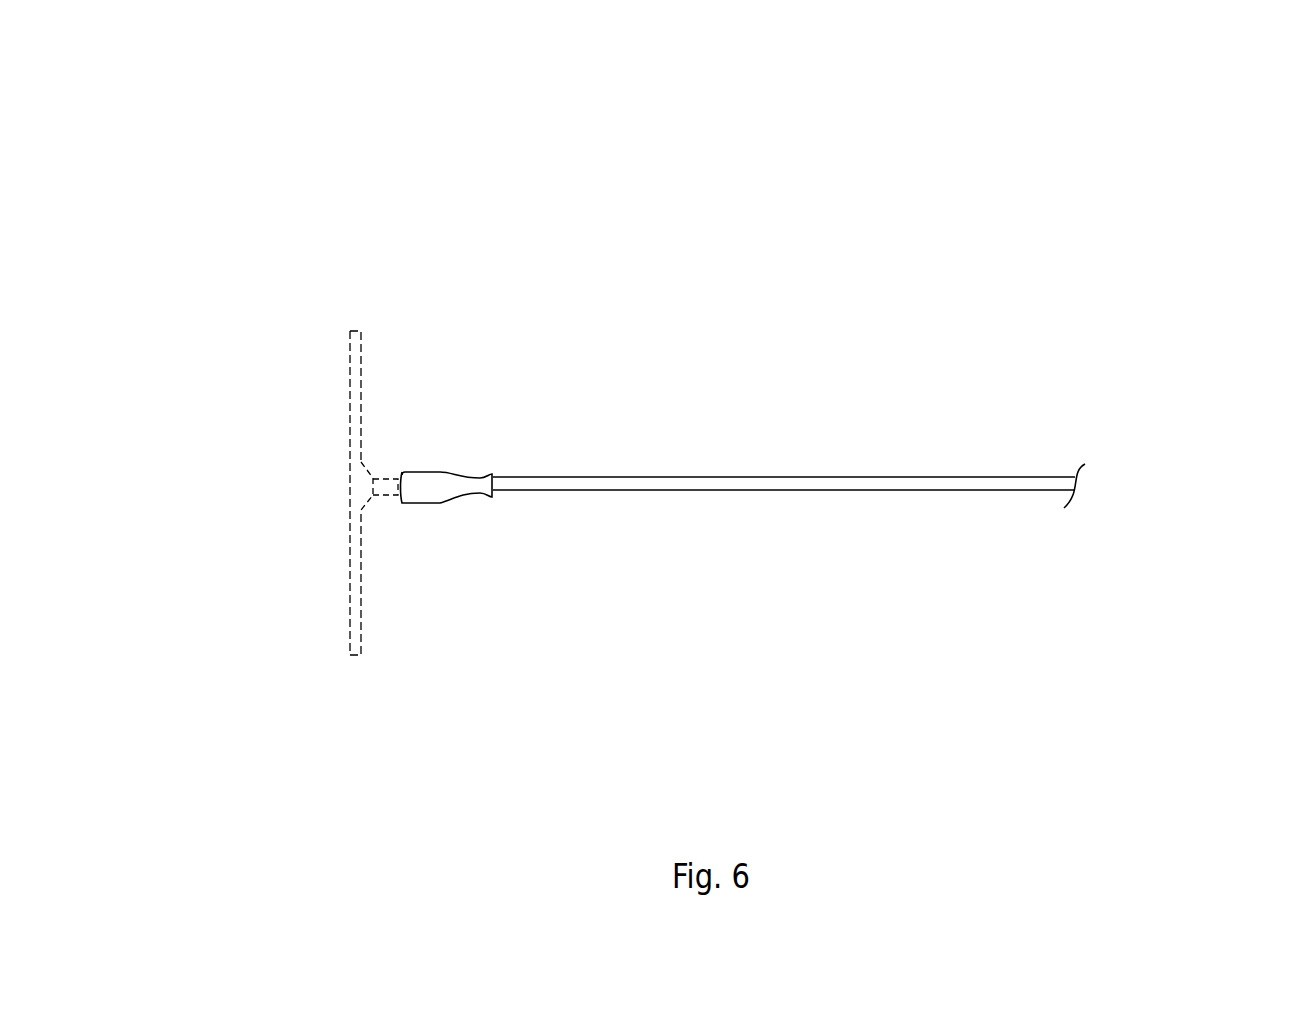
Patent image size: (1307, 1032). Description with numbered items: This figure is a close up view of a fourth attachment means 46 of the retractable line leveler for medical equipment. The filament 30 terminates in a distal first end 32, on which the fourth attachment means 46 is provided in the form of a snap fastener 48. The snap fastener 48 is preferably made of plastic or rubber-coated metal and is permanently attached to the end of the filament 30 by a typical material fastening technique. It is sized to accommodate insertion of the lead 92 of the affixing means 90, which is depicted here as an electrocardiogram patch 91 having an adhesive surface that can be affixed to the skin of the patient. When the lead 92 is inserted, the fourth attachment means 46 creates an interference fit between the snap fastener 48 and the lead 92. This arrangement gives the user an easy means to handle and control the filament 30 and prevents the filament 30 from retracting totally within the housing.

The fourth attachment means 46 is at (1222, 193).
The affixing means 90 is at (313, 602).
The ECG patch 91 is at (358, 632).
The lead 92 is at (392, 487).
The snap fastener 48 is at (443, 472).
The filament 30 is at (815, 477).
The distal first end 32 is at (920, 562).